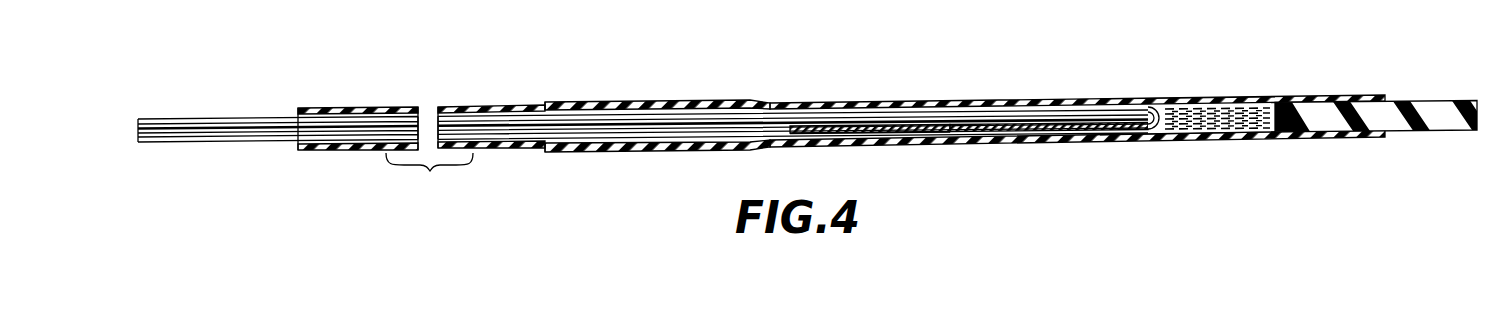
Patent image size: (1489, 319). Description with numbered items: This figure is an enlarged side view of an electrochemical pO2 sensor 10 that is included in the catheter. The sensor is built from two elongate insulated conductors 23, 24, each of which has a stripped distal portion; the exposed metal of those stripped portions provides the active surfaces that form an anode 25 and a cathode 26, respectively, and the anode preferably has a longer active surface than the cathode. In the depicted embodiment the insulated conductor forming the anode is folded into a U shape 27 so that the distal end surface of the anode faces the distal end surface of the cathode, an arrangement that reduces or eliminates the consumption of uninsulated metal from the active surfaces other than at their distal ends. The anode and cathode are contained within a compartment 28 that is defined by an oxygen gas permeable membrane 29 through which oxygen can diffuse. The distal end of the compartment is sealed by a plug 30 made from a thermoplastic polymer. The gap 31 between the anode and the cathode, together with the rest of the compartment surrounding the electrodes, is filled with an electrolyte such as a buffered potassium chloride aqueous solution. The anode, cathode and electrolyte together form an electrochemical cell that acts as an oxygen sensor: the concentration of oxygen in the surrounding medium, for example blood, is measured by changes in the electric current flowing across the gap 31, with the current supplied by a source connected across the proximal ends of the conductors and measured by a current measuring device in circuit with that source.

The electrochemical pO2 sensor 10 is at (991, 101).
The elongate insulated conductor 23 is at (913, 110).
The elongate insulated conductor 24 is at (607, 144).
The anode 25 is at (1057, 131).
The cathode 26 is at (843, 130).
The U shape 27 is at (1150, 128).
The compartment 28 is at (1172, 125).
The oxygen gas permeable membrane 29 is at (1085, 98).
The plug 30 is at (1413, 78).
The gap 31 is at (855, 126).